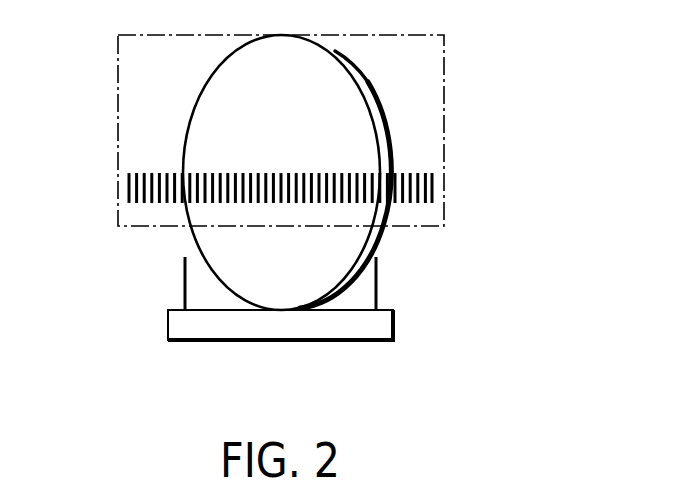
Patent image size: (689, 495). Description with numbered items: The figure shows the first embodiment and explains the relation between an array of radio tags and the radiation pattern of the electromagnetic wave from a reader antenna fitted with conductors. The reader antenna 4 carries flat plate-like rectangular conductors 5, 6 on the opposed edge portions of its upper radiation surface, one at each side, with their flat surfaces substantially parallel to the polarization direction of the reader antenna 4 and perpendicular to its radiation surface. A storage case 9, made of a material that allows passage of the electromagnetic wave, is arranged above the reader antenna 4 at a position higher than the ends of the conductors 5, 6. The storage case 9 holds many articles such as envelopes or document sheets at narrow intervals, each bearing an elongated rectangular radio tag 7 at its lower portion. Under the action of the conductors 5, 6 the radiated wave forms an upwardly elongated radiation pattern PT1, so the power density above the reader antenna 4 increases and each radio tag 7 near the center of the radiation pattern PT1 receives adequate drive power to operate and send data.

The storage case 9 is at (444, 62).
The radiation pattern PT1 is at (203, 88).
The radio tag 7 is at (128, 190).
The conductor 5 is at (183, 283).
The conductor 6 is at (378, 278).
The reader antenna 4 is at (313, 328).